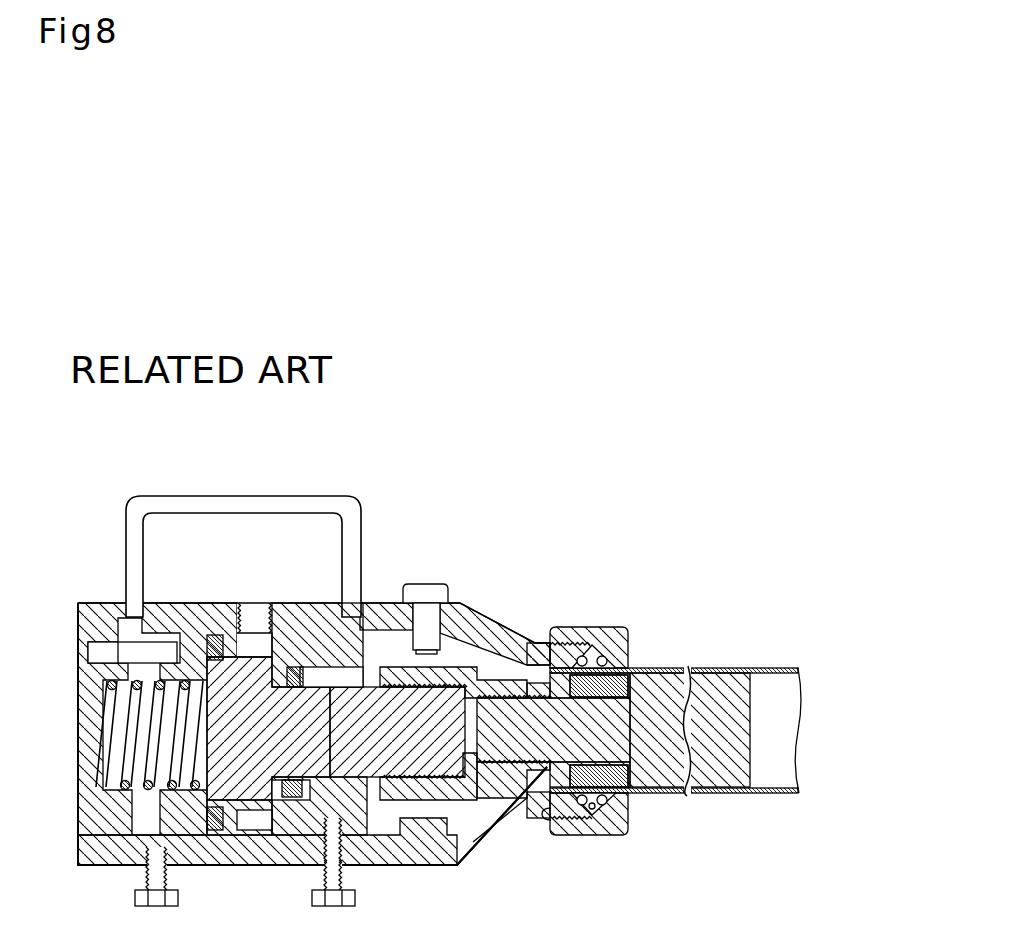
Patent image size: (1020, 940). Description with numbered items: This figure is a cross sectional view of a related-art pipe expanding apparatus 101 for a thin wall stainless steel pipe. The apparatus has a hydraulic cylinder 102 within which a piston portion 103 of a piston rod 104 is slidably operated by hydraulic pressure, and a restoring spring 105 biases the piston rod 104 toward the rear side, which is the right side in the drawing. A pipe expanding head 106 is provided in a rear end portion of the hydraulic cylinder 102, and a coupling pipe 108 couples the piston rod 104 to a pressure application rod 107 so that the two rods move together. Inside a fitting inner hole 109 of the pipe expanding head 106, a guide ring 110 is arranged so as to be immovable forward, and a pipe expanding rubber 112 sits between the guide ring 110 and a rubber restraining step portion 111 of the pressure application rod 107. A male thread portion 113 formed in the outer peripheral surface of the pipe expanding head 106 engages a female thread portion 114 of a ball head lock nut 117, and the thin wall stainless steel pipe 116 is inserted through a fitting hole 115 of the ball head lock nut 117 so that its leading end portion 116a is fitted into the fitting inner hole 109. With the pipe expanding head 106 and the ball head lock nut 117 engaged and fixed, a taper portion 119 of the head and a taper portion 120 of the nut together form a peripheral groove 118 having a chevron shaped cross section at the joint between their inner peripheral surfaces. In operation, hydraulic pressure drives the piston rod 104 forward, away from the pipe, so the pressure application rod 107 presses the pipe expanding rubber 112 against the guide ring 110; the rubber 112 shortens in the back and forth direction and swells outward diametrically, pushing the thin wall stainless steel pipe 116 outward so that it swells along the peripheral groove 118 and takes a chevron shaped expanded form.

The pipe expanding apparatus 101 is at (428, 542).
The hydraulic cylinder 102 is at (261, 870).
The piston portion 103 is at (250, 760).
The piston rod 104 is at (358, 743).
The restoring spring 105 is at (103, 743).
The pipe expanding head 106 is at (497, 583).
The pressure application rod 107 is at (745, 760).
The coupling pipe 108 is at (440, 800).
The fitting inner hole 109 is at (540, 677).
The guide ring 110 is at (572, 796).
The rubber restraining step portion 111 is at (625, 788).
The pipe expanding rubber 112 is at (635, 794).
The male thread portion 113 is at (540, 818).
The female thread portion 114 is at (549, 815).
The fitting hole 115 is at (649, 668).
The thin wall stainless steel pipe 116 is at (751, 660).
The leading end portion 116a is at (570, 820).
The ball head lock nut 117 is at (636, 634).
The peripheral groove 118 is at (648, 562).
The taper portion 119 is at (581, 656).
The taper portion 120 is at (603, 656).